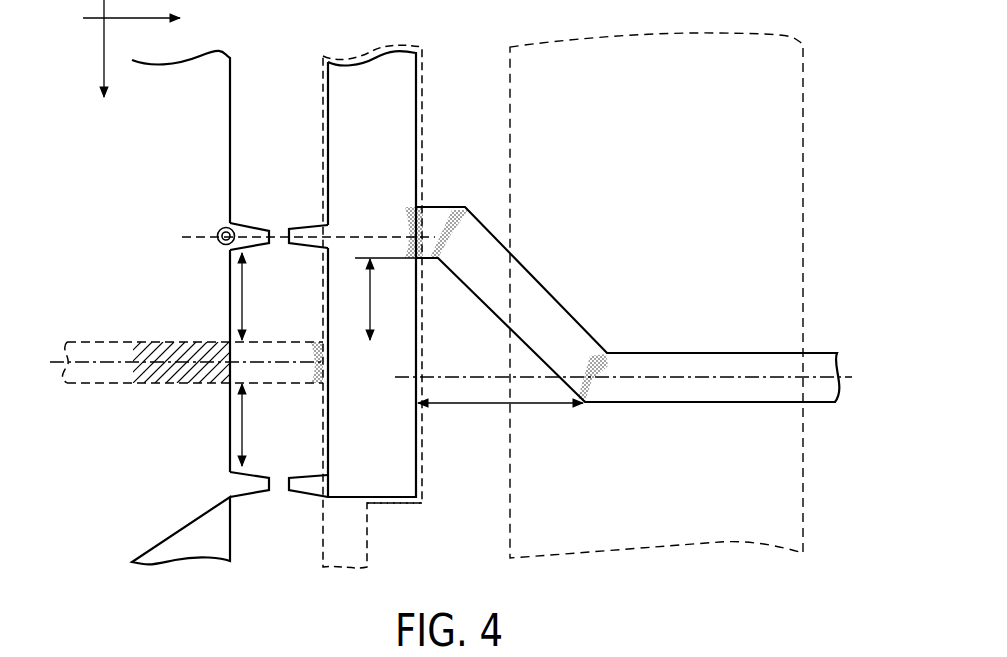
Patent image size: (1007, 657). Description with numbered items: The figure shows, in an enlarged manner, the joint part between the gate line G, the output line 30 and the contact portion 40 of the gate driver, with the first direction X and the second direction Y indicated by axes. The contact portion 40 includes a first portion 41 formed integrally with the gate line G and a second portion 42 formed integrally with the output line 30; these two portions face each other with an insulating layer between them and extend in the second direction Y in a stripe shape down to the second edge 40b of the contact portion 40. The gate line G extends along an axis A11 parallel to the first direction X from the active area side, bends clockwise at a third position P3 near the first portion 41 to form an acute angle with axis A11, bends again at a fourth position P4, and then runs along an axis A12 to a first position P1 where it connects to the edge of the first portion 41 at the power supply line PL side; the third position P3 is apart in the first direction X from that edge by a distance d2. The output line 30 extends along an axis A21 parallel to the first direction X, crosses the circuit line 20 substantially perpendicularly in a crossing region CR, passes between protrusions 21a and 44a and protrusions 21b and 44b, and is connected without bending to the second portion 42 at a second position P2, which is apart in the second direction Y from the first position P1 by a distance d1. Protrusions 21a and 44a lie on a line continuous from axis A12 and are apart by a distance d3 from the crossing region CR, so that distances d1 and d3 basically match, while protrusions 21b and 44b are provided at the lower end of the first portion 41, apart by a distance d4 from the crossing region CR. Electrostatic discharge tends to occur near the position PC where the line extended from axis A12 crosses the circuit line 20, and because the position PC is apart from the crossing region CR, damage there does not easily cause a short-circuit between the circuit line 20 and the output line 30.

The circuit line 20 is at (132, 199).
The protrusion 21a is at (238, 223).
The protrusion 21b is at (246, 499).
The position PC is at (222, 245).
The output line 30 is at (112, 340).
The axis A21 is at (66, 362).
The crossing region CR is at (150, 378).
The second position P2 is at (313, 376).
The contact portion 40 is at (368, 302).
The first portion 41 is at (418, 62).
The second portion 42 is at (423, 92).
The second edge 40b is at (393, 513).
The protrusion 44a is at (300, 225).
The protrusion 44b is at (300, 498).
The gate line G is at (820, 352).
The axis A11 is at (730, 372).
The axis A12 is at (365, 238).
The first position P1 is at (420, 222).
The third position P3 is at (597, 388).
The fourth position P4 is at (455, 235).
The power supply line PL is at (805, 72).
The distance d1 is at (383, 299).
The distance d2 is at (500, 419).
The distance d3 is at (256, 296).
The distance d4 is at (256, 425).
The first direction X is at (146, 19).
The second direction Y is at (103, 68).